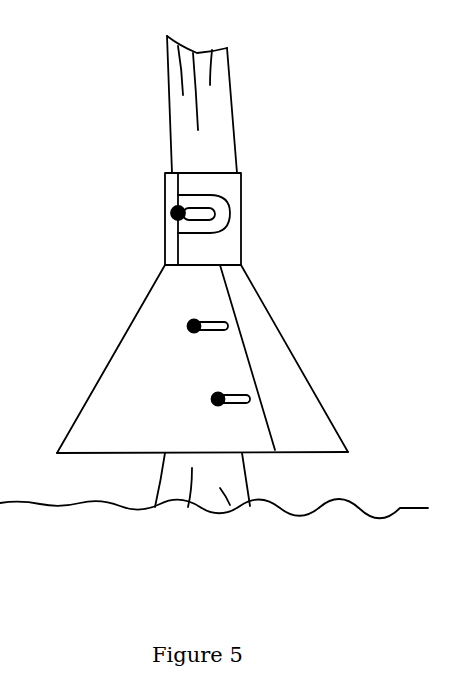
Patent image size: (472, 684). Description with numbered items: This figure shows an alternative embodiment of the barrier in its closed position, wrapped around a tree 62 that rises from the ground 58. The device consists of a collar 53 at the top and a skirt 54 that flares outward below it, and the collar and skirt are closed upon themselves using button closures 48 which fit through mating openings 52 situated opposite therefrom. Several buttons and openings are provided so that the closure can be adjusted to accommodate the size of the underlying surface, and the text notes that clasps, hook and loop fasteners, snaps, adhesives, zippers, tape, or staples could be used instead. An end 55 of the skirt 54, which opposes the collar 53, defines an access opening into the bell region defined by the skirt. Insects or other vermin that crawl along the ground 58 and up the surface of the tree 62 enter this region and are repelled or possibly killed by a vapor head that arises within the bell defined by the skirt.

The button closures 48 is at (163, 215).
The mating openings 52 is at (185, 214).
The collar 53 is at (240, 184).
The skirt 54 is at (292, 352).
The end of the skirt 55 is at (93, 453).
The ground 58 is at (214, 522).
The tree 62 is at (240, 483).